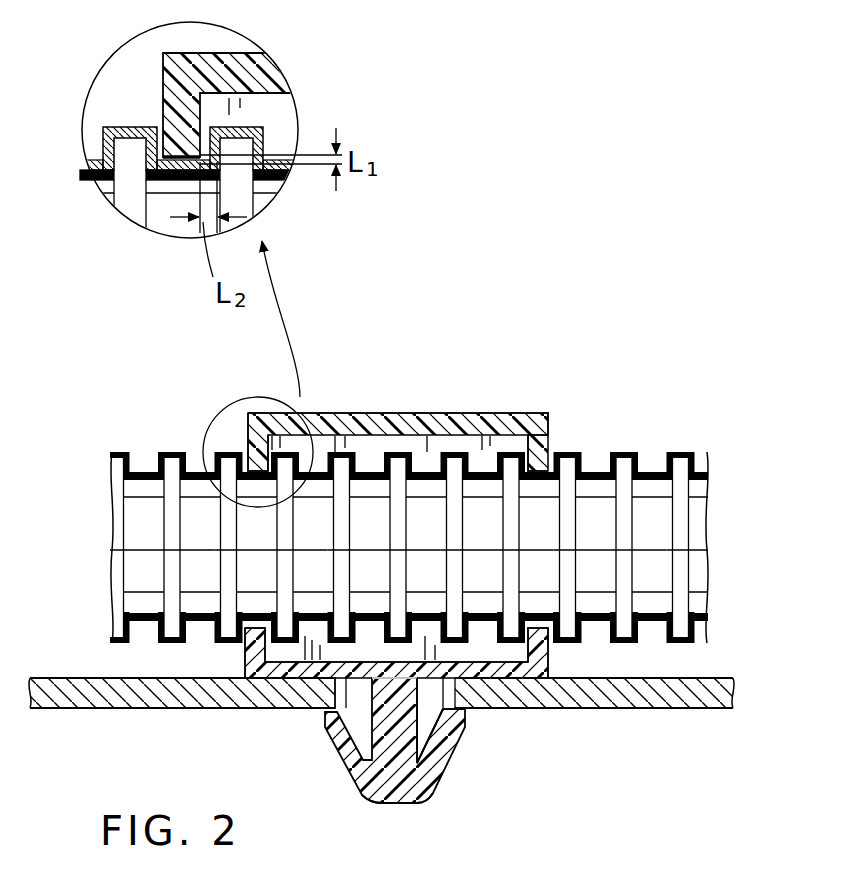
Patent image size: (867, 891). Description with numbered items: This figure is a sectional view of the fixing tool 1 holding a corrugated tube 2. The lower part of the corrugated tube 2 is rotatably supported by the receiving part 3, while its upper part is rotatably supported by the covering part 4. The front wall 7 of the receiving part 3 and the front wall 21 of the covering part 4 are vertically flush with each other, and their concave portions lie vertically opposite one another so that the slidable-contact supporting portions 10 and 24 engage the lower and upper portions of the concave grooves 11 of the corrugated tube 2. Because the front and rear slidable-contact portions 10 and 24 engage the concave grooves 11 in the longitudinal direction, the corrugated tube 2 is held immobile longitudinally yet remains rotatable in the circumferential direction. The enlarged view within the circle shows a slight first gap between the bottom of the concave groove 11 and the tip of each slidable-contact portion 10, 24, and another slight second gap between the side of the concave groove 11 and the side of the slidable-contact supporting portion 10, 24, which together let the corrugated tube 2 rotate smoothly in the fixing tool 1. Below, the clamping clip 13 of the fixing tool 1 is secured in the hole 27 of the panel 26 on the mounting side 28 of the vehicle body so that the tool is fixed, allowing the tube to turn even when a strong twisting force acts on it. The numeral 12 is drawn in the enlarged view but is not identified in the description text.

The fixing tool 1 is at (480, 392).
The corrugated tube 2 is at (677, 450).
The receiving part 3 is at (441, 779).
The covering part 4 is at (543, 409).
The front wall 7 is at (250, 630).
The slidable-contact supporting portion 10 is at (547, 607).
The concave groove 11 is at (565, 495).
The ridge top wall 12 is at (132, 128).
The clamping clip 13 is at (403, 803).
The front wall 21 is at (253, 448).
The slidable-contact supporting portion 24 is at (510, 504).
The panel 26 is at (665, 700).
The hole 27 is at (440, 712).
The mounting side 28 is at (706, 714).